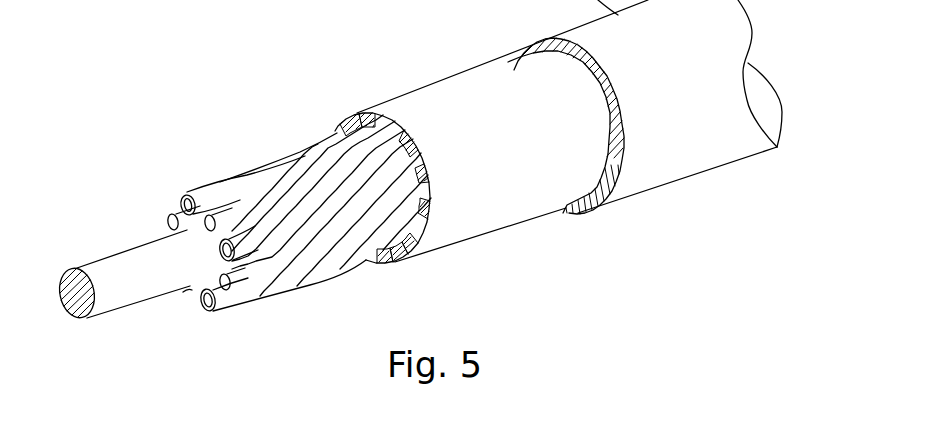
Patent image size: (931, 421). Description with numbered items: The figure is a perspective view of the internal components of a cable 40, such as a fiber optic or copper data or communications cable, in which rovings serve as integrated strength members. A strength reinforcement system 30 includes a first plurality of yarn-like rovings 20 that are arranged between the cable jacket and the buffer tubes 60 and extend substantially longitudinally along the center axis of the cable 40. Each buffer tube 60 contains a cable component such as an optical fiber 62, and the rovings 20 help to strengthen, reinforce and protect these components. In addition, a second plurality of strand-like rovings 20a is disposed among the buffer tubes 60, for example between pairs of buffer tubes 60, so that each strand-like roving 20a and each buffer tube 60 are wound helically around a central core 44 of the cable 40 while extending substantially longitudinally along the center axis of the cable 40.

The cable 40 is at (403, 172).
The strength reinforcement system 30 is at (466, 66).
The roving 20 is at (355, 113).
The strand-like roving 20a is at (285, 157).
The buffer tube 60 is at (200, 188).
The optical fiber 62 is at (182, 203).
The central core 44 is at (68, 313).